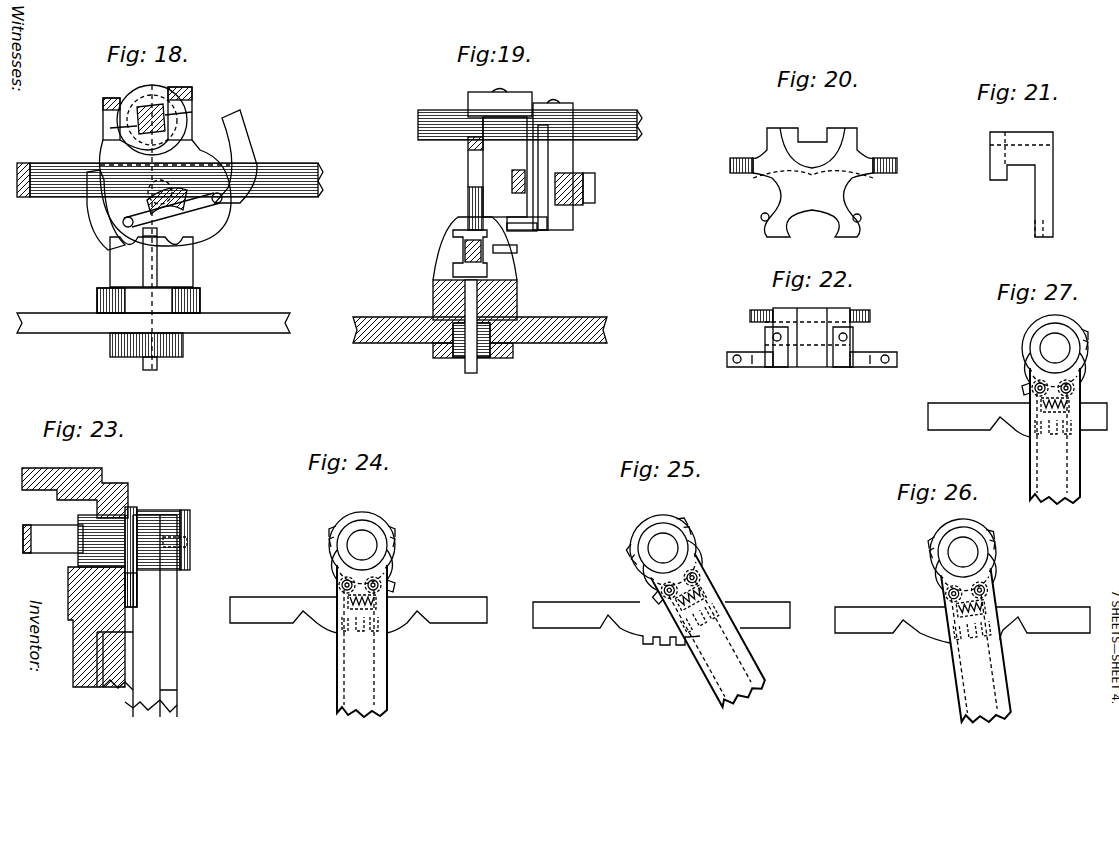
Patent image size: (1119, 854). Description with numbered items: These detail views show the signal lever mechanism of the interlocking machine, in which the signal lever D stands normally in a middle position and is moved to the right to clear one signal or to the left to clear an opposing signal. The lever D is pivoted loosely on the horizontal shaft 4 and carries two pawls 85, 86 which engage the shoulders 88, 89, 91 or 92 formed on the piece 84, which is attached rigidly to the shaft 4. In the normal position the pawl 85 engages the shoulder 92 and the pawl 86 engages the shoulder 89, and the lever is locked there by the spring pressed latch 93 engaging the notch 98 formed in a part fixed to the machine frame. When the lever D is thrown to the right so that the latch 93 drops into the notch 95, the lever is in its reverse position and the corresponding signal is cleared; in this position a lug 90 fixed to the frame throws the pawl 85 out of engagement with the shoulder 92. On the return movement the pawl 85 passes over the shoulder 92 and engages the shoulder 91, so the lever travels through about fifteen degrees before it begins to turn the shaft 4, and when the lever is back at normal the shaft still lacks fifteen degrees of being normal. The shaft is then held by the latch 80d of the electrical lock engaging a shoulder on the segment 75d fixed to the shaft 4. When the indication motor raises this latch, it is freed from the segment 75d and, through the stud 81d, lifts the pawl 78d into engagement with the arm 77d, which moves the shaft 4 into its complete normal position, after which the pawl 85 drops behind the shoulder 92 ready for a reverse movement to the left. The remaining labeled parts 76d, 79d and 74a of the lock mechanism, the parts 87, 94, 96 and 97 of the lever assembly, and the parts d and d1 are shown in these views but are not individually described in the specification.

In FIG. 18, the shaft 4 is at (185, 124).
In FIG. 19, the shaft 4 is at (597, 118).
In FIG. 23, the shaft 4 is at (52, 530).
In FIG. 24, the shaft 4 is at (362, 545).
In FIG. 25, the shaft 4 is at (663, 548).
In FIG. 26, the shaft 4 is at (963, 552).
In FIG. 27, the shaft 4 is at (1055, 348).
In FIG. 18, the yoke 76d is at (205, 178).
In FIG. 19, the yoke 76d is at (510, 177).
In FIG. 20, the yoke 76d is at (825, 185).
In FIG. 21, the yoke 76d is at (1045, 185).
In FIG. 22, the yoke 76d is at (863, 313).
In FIG. 18, the segment 75d is at (245, 215).
In FIG. 19, the segment 75d is at (470, 205).
In FIG. 18, the arm 77d is at (197, 217).
In FIG. 19, the arm 77d is at (553, 163).
In FIG. 18, the pawl 78d is at (143, 230).
In FIG. 19, the pawl 78d is at (543, 232).
In FIG. 18, the cam segment 79d is at (200, 212).
In FIG. 18, the latch 80d is at (147, 240).
In FIG. 19, the latch 80d is at (455, 238).
In FIG. 19, the bolt 74a is at (583, 207).
In FIG. 19, the stud 81d is at (517, 249).
In FIG. 23, the piece 84 is at (133, 510).
In FIG. 24, the piece 84 is at (383, 522).
In FIG. 25, the piece 84 is at (655, 520).
In FIG. 26, the piece 84 is at (946, 527).
In FIG. 27, the piece 84 is at (1080, 328).
In FIG. 23, the pawl 85 is at (137, 600).
In FIG. 24, the pawl 85 is at (330, 570).
In FIG. 25, the pawl 85 is at (658, 592).
In FIG. 26, the pawl 85 is at (936, 585).
In FIG. 27, the pawl 85 is at (1025, 376).
In FIG. 24, the pawl 86 is at (395, 565).
In FIG. 25, the pawl 86 is at (706, 560).
In FIG. 26, the pawl 86 is at (997, 572).
In FIG. 27, the pawl 86 is at (1088, 378).
In FIG. 24, the spring 87 is at (362, 611).
In FIG. 25, the spring 87 is at (722, 596).
In FIG. 26, the spring 87 is at (995, 610).
In FIG. 27, the spring 87 is at (1055, 415).
In FIG. 24, the shoulder 88 is at (397, 528).
In FIG. 25, the shoulder 88 is at (697, 530).
In FIG. 26, the shoulder 88 is at (995, 536).
In FIG. 27, the shoulder 88 is at (1088, 336).
In FIG. 24, the shoulder 89 is at (397, 548).
In FIG. 25, the shoulder 89 is at (696, 541).
In FIG. 26, the shoulder 89 is at (996, 548).
In FIG. 27, the shoulder 89 is at (1088, 350).
In FIG. 24, the lug 90 is at (393, 578).
In FIG. 25, the lug 90 is at (645, 585).
In FIG. 27, the lug 90 is at (1024, 363).
In FIG. 24, the shoulder 91 is at (330, 528).
In FIG. 25, the shoulder 91 is at (636, 566).
In FIG. 26, the shoulder 91 is at (933, 563).
In FIG. 24, the shoulder 92 is at (330, 548).
In FIG. 25, the shoulder 92 is at (638, 570).
In FIG. 26, the shoulder 92 is at (933, 568).
In FIG. 23, the spring pressed latch 93 is at (127, 658).
In FIG. 24, the spring pressed latch 93 is at (352, 700).
In FIG. 25, the spring pressed latch 93 is at (740, 695).
In FIG. 26, the spring pressed latch 93 is at (973, 713).
In FIG. 27, the spring pressed latch 93 is at (1078, 491).
In FIG. 24, the rack bar 94 is at (312, 620).
In FIG. 25, the rack bar 94 is at (610, 625).
In FIG. 26, the rack bar 94 is at (910, 627).
In FIG. 27, the rack bar 94 is at (1003, 425).
In FIG. 24, the notch 95 is at (405, 620).
In FIG. 25, the notch 95 is at (736, 613).
In FIG. 26, the notch 95 is at (1013, 632).
In FIG. 24, the tooth 96 is at (342, 636).
In FIG. 25, the tooth 96 is at (646, 640).
In FIG. 26, the tooth 96 is at (948, 642).
In FIG. 27, the tooth 96 is at (1035, 440).
In FIG. 24, the tooth 97 is at (380, 636).
In FIG. 25, the tooth 97 is at (680, 644).
In FIG. 26, the tooth 97 is at (975, 648).
In FIG. 27, the tooth 97 is at (1072, 440).
In FIG. 24, the notch 98 is at (358, 635).
In FIG. 25, the notch 98 is at (665, 646).
In FIG. 26, the notch 98 is at (955, 650).
In FIG. 27, the notch 98 is at (1052, 435).
In FIG. 23, the lever D is at (155, 616).
In FIG. 23, the plate d is at (178, 638).
In FIG. 23, the plate flange d1 is at (178, 696).